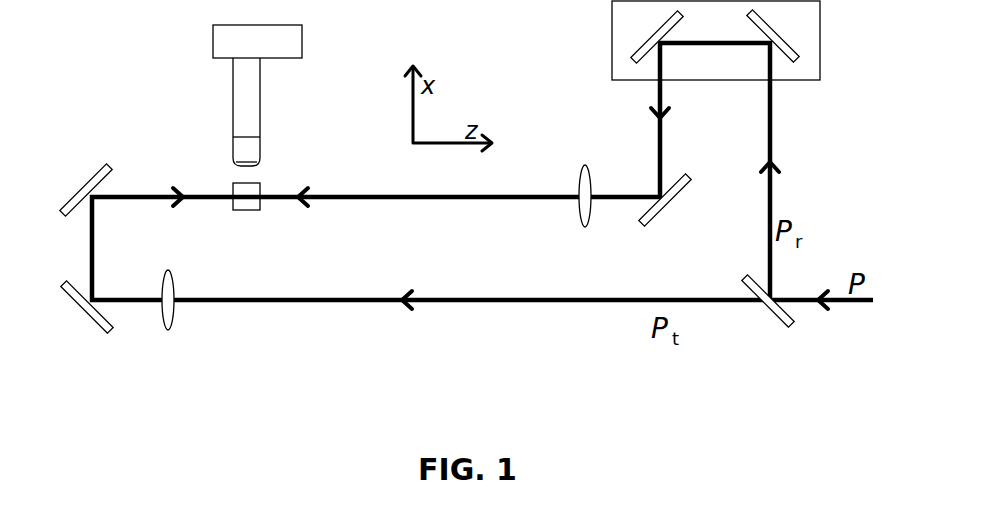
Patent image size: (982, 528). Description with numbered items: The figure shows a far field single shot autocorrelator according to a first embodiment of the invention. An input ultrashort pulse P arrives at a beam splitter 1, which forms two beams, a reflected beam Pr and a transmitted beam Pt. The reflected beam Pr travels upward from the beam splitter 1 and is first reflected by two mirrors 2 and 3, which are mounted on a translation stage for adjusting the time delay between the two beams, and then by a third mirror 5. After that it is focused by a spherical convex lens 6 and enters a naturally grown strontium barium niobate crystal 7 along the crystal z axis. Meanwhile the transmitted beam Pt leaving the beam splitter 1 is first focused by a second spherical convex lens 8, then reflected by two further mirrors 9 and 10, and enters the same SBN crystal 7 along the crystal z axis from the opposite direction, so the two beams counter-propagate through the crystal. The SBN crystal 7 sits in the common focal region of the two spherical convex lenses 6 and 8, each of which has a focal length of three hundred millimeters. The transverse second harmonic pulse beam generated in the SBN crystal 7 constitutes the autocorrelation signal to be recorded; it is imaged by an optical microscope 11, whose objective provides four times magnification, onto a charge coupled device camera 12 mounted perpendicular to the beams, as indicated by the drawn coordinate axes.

The beam splitter 1 is at (768, 310).
The mirror 2 is at (777, 36).
The mirror 3 is at (655, 36).
The mirror 5 is at (665, 202).
The lens 6 is at (575, 210).
The sample 7 is at (246, 217).
The lens 8 is at (180, 307).
The mirror 9 is at (85, 313).
The mirror 10 is at (80, 189).
The objective lens 11 is at (267, 114).
The detector 12 is at (277, 43).